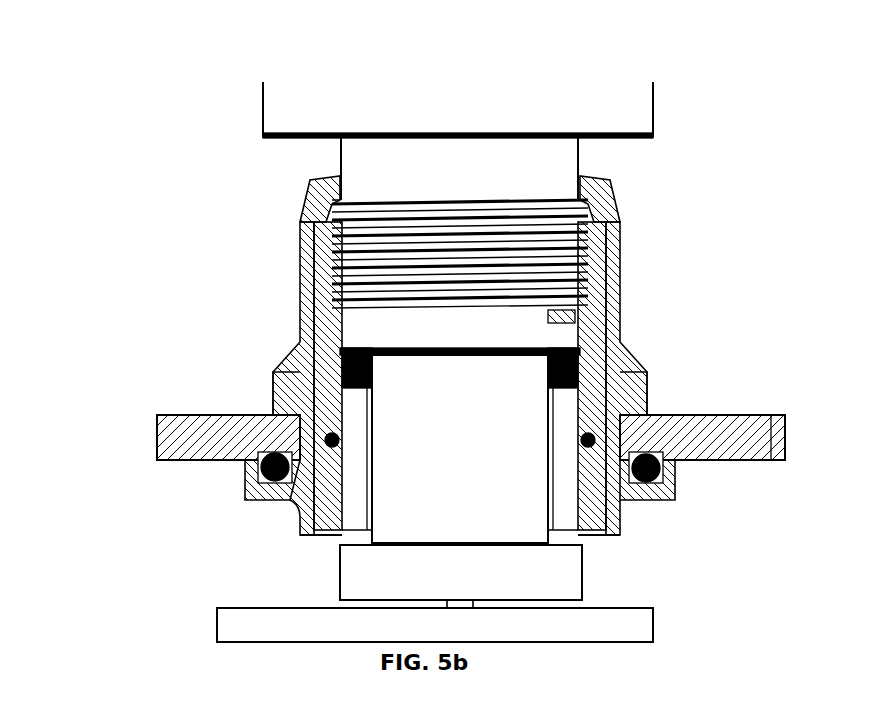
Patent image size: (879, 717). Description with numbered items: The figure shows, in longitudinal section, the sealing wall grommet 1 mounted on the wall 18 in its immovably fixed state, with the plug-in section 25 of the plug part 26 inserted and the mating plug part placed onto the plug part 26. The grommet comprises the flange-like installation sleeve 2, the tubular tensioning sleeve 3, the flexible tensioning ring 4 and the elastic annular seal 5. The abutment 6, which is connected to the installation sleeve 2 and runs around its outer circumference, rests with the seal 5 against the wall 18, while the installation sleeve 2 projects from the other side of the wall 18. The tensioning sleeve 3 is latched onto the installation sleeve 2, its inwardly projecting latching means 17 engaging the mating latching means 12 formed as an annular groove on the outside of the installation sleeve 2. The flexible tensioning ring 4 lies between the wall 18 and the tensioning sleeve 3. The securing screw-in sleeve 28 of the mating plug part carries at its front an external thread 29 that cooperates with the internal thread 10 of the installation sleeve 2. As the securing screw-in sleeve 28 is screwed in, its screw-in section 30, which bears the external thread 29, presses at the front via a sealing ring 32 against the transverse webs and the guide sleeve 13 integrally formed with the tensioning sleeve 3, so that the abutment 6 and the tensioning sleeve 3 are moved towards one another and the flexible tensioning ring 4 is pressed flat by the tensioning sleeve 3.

The sealing wall grommet 1 is at (118, 104).
The installation sleeve 2 is at (608, 485).
The tensioning sleeve 3 is at (275, 375).
The flexible tensioning ring 4 is at (268, 408).
The elastic annular seal 5 is at (676, 475).
The abutment 6 is at (258, 500).
The internal thread 10 is at (622, 275).
The mating latching means 12 is at (312, 210).
The guide sleeve 13 is at (650, 392).
The latching means 17 is at (620, 226).
The wall 18 is at (158, 440).
The plug-in section 25 is at (487, 413).
The plug part 26 is at (390, 570).
The securing screw-in sleeve 28 is at (665, 118).
The external thread 29 is at (440, 200).
The screw-in section 30 is at (507, 327).
The sealing ring 32 is at (305, 345).